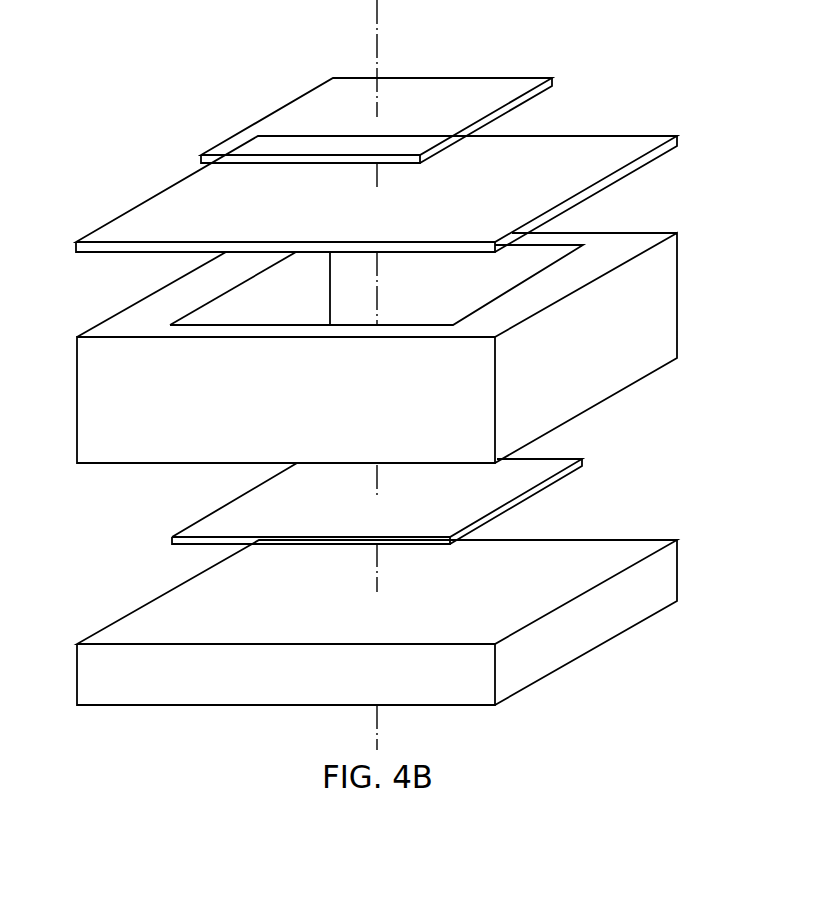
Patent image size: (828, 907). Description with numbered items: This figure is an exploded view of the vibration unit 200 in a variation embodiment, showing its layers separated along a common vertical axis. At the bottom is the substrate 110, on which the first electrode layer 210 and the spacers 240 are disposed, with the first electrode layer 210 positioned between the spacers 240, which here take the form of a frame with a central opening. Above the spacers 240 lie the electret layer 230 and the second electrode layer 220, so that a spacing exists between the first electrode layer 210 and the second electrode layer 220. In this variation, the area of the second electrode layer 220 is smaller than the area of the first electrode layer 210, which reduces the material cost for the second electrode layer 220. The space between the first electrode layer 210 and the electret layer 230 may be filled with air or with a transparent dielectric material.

The vibration unit 200 is at (124, 69).
The second electrode layer 220 is at (492, 93).
The electret layer 230 is at (608, 147).
The spacers 240 is at (608, 245).
The first electrode layer 210 is at (535, 473).
The substrate 110 is at (608, 550).